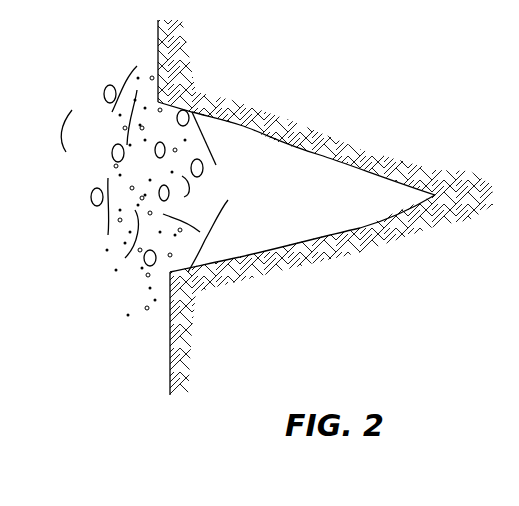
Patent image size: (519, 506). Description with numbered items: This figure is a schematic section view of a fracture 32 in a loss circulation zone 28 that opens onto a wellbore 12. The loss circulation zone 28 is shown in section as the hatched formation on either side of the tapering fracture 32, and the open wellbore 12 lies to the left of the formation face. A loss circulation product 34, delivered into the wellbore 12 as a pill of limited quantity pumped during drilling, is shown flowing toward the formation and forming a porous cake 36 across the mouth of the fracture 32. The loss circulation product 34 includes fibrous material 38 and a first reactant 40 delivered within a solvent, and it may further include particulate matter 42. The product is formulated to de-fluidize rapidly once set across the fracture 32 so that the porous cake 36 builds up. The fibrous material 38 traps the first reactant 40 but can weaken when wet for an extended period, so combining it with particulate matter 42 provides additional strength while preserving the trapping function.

The wellbore 12 is at (130, 373).
The loss circulation zone 28 is at (242, 325).
The fracture 32 is at (402, 190).
The loss circulation product 34 is at (106, 278).
The porous cake 36 is at (174, 112).
The fibrous material 38 is at (218, 222).
The first reactant 40 is at (104, 92).
The particulate matter 42 is at (108, 224).